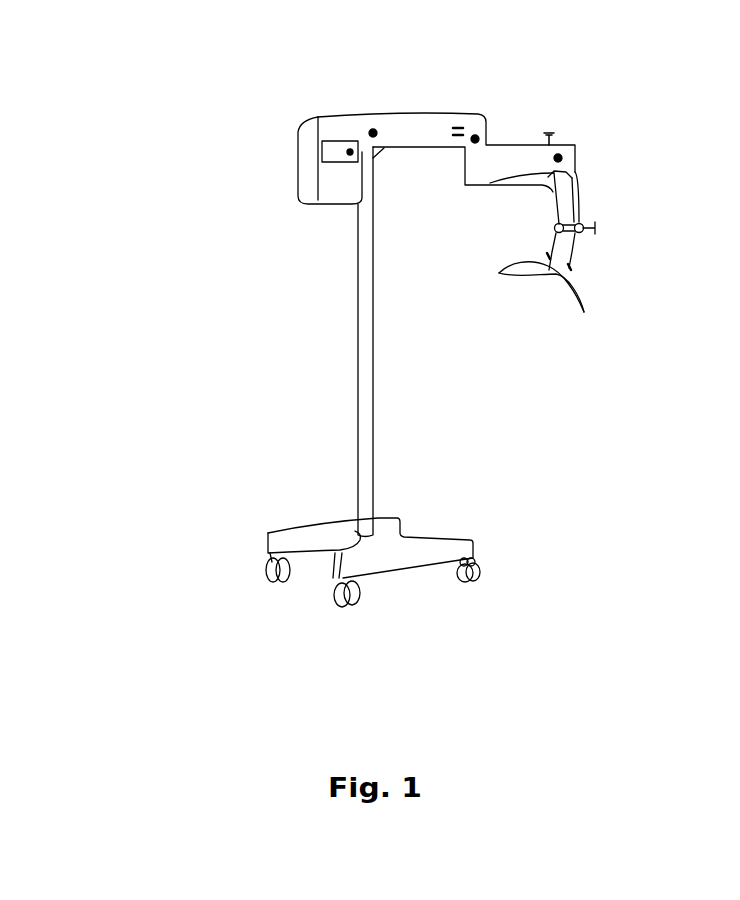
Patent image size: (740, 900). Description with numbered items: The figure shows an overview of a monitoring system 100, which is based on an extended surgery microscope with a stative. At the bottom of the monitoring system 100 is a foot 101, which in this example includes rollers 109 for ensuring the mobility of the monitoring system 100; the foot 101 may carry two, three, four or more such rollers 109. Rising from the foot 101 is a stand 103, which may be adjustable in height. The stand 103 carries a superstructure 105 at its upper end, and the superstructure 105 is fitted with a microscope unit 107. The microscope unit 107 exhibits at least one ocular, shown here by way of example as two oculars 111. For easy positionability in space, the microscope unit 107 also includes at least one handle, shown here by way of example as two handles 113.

The monitoring system 100 is at (232, 320).
The foot 101 is at (415, 548).
The stand 103 is at (374, 399).
The superstructure 105 is at (410, 130).
The microscope unit 107 is at (573, 252).
The rollers 109 is at (272, 580).
The oculars 111 is at (555, 232).
The handles 113 is at (574, 287).